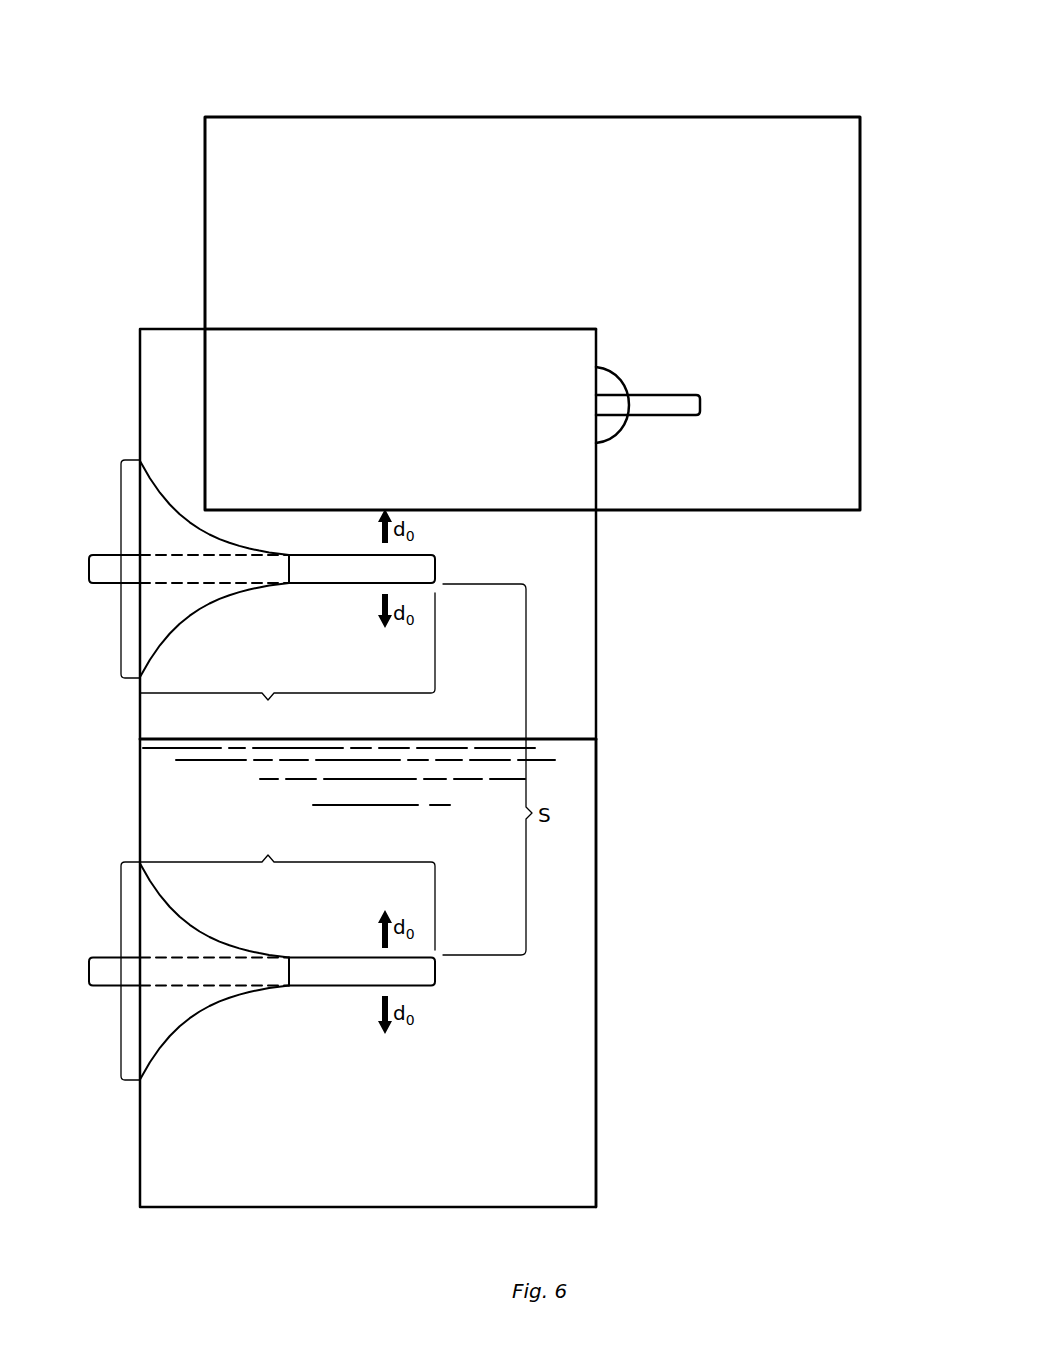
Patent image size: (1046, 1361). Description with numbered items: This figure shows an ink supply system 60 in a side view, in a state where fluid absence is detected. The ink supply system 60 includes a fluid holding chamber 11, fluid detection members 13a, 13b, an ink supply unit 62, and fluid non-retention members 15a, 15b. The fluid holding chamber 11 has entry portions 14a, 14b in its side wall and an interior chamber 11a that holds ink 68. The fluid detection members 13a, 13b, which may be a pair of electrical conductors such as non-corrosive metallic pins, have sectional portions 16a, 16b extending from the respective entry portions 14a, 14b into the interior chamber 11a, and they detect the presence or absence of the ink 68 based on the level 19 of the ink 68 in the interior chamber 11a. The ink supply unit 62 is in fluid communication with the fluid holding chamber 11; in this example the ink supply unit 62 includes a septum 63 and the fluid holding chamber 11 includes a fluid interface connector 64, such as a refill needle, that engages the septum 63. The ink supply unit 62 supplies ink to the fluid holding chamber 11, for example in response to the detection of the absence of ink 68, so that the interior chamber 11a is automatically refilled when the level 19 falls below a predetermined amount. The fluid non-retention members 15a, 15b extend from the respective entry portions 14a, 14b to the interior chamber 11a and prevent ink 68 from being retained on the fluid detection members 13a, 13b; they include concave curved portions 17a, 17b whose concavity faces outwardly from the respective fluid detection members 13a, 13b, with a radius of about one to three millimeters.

The ink supply system 60 is at (494, 40).
The ink supply unit 62 is at (713, 117).
The septum 63 is at (618, 372).
The fluid interface connector 64 is at (672, 416).
The fluid holding chamber 11 is at (140, 332).
The interior chamber 11a is at (428, 348).
The fluid detection member 13a is at (437, 567).
The fluid detection member 13b is at (437, 972).
The entry portion 14a is at (120, 567).
The entry portion 14b is at (120, 970).
The fluid non-retention member 15a is at (160, 522).
The fluid non-retention member 15b is at (155, 1022).
The sectional portion 16a is at (287, 663).
The sectional portion 16b is at (287, 889).
The concave curved portion 17a is at (220, 530).
The concave curved portion 17b is at (197, 1017).
The level 19 is at (538, 738).
The ink 68 is at (568, 981).